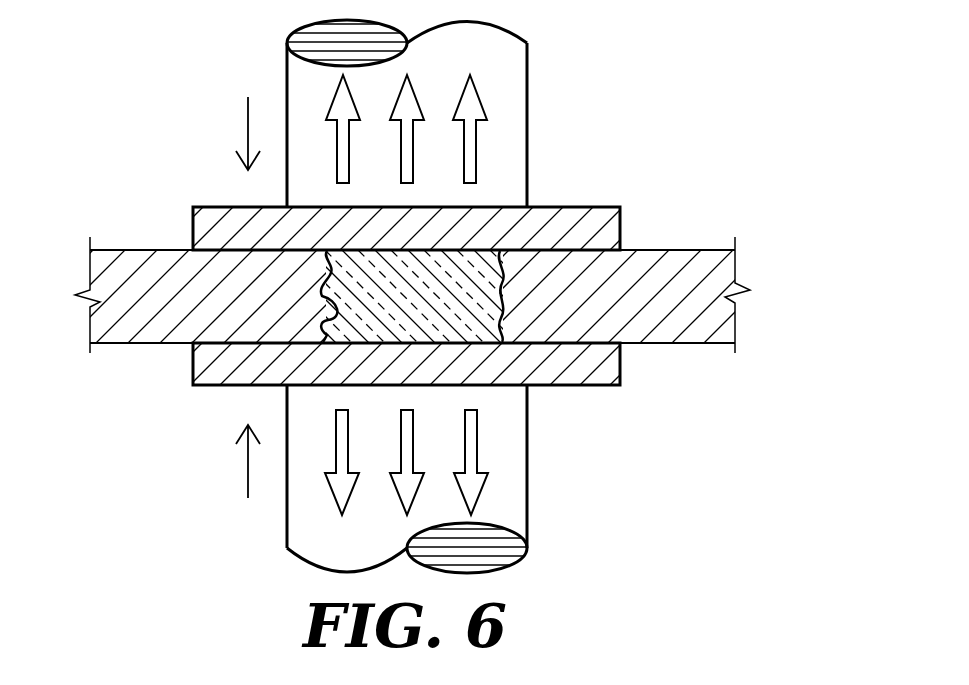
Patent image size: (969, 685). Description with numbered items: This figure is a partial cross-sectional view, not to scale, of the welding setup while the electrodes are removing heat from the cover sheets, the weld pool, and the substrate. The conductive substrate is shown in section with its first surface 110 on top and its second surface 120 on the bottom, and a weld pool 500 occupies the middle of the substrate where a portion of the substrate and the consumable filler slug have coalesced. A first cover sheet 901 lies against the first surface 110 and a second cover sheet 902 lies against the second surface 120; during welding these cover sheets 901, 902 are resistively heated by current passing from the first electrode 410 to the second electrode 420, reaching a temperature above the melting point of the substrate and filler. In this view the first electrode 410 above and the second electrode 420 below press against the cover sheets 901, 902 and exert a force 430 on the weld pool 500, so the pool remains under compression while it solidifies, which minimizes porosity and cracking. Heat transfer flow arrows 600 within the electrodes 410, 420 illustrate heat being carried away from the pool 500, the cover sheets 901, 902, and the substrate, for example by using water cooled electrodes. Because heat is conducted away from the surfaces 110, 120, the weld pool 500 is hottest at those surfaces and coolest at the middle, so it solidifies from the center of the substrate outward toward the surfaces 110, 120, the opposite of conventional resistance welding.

The first surface of the substrate 110 is at (675, 250).
The second surface of the substrate 120 is at (675, 343).
The first electrode 410 is at (527, 43).
The second electrode 420 is at (527, 535).
The force 430 is at (248, 105).
The weld pool 500 is at (213, 342).
The heat transfer flow arrows 600 is at (477, 128).
The first cover sheet 901 is at (573, 207).
The second cover sheet 902 is at (620, 385).